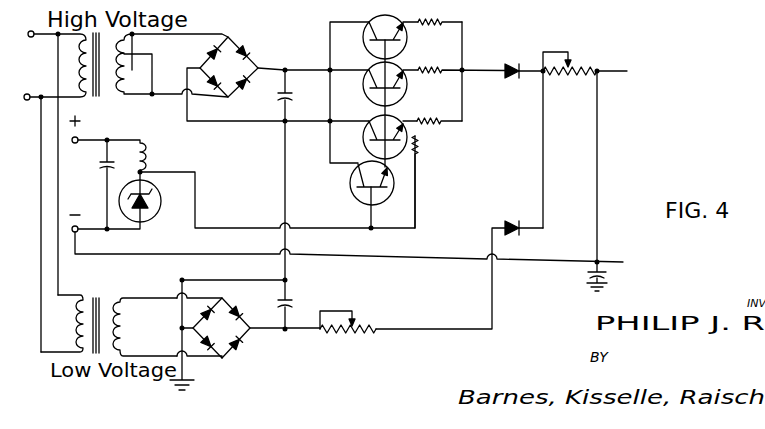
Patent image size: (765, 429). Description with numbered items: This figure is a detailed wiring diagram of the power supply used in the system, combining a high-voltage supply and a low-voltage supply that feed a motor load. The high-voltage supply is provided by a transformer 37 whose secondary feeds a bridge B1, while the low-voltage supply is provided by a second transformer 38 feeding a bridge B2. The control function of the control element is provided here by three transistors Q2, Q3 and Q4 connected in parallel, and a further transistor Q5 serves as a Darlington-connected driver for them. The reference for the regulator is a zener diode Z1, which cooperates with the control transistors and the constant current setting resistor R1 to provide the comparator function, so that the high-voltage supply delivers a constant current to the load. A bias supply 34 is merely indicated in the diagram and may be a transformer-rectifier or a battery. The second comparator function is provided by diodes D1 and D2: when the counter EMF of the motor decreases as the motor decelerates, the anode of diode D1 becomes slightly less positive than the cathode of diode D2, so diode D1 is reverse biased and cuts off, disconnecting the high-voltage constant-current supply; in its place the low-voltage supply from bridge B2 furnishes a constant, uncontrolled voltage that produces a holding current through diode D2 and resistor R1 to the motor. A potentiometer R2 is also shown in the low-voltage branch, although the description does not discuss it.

The transformer 37 is at (100, 95).
The transformer 38 is at (101, 378).
The bias supply 34 is at (90, 184).
The zener diode Z1 is at (147, 211).
The bridge B1 is at (229, 39).
The bridge B2 is at (228, 358).
The transistor Q2 is at (406, 44).
The transistor Q3 is at (406, 96).
The transistor Q4 is at (365, 147).
The transistor Q5 is at (352, 194).
The diode D1 is at (524, 64).
The diode D2 is at (512, 221).
The constant current setting resistor R1 is at (574, 70).
The potentiometer R2 is at (366, 338).